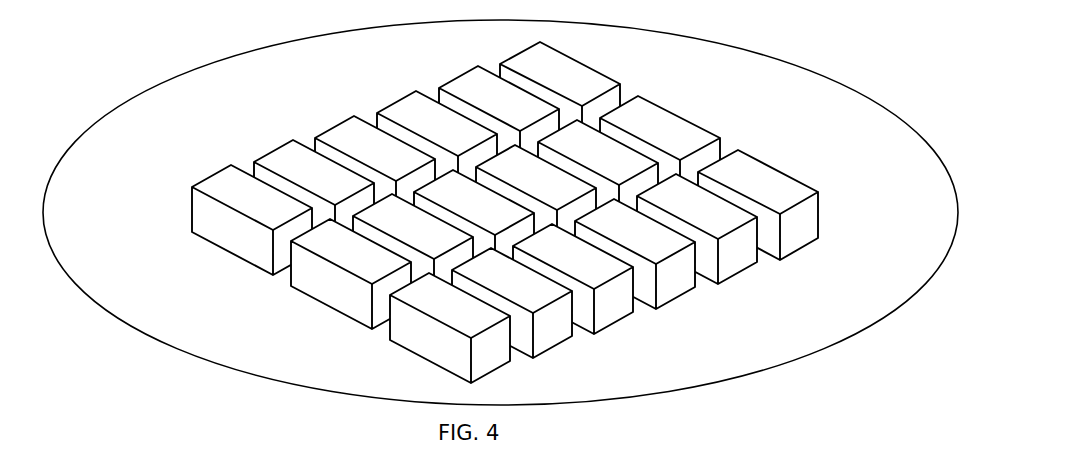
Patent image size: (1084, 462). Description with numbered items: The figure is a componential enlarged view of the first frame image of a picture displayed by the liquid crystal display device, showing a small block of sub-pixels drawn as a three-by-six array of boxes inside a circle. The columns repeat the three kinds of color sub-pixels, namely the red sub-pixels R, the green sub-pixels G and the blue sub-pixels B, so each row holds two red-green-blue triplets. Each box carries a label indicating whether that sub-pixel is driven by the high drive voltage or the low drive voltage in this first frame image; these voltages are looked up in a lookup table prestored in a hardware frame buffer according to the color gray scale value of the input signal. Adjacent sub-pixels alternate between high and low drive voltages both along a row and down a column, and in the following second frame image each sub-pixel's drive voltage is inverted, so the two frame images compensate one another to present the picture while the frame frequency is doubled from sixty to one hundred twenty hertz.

The red sub-pixel R is at (272, 124).
The green sub-pixel G is at (350, 97).
The blue sub-pixel B is at (400, 63).